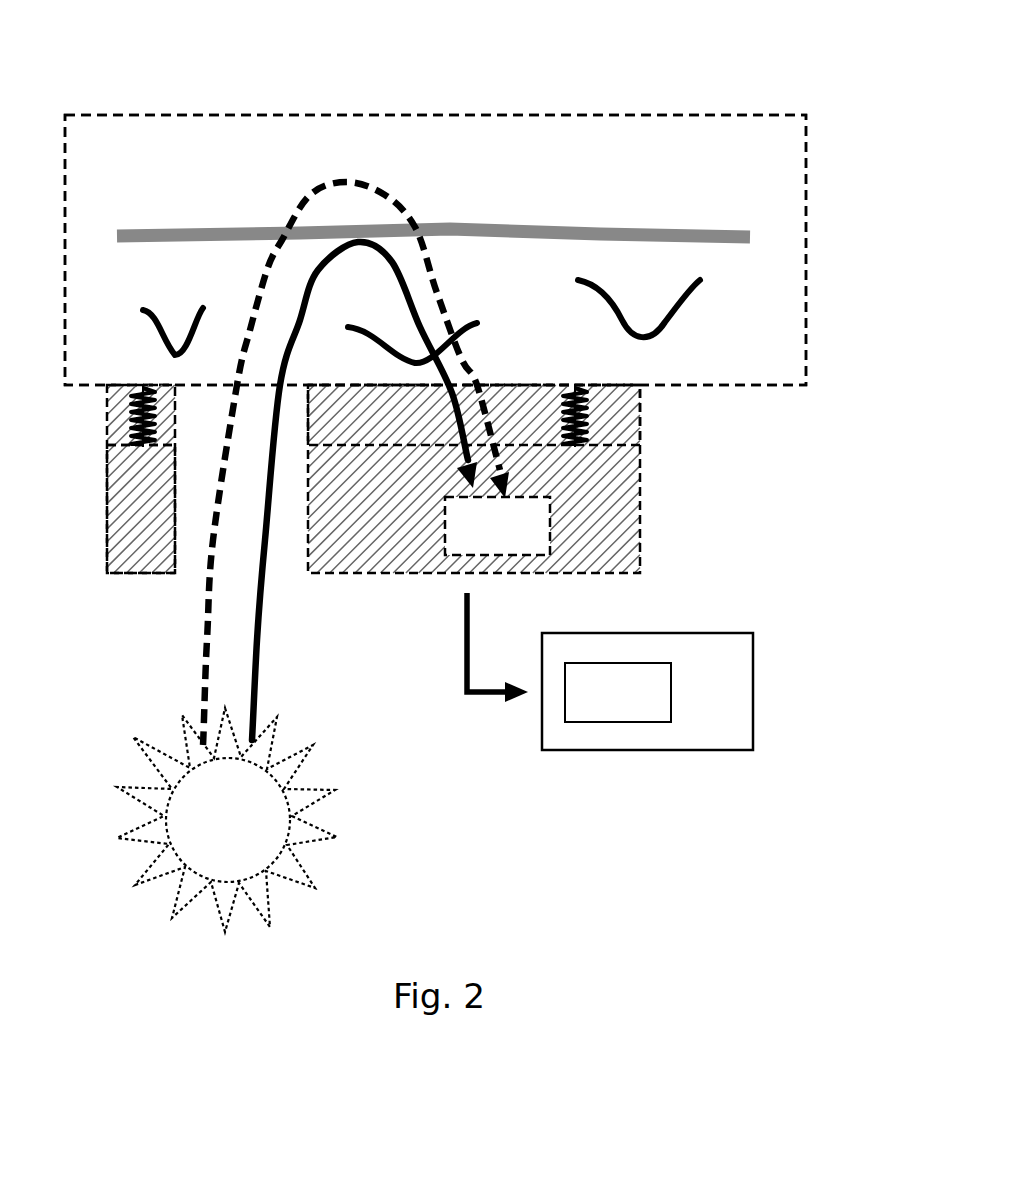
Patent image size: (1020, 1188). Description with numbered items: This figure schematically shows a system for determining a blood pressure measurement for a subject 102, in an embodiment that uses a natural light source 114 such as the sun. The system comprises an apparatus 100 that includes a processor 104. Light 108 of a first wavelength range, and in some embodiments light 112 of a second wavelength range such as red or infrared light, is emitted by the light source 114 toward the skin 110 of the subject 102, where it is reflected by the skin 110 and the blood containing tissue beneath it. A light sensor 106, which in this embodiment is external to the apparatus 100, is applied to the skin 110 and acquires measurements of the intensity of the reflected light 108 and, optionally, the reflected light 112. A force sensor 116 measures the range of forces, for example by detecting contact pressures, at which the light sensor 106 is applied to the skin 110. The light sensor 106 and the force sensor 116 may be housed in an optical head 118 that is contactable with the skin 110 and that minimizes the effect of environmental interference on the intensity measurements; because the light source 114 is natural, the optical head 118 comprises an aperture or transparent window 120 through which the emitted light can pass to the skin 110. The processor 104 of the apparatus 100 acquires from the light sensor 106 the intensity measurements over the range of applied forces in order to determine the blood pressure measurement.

The apparatus 100 is at (745, 677).
The subject 102 is at (806, 172).
The processor 104 is at (677, 275).
The light sensor 106 is at (497, 526).
The light of the first wavelength range 108 is at (474, 479).
The skin 110 is at (119, 159).
The light of the second wavelength range 112 is at (474, 415).
The light source 114 is at (313, 557).
The force sensor 116 is at (595, 415).
The optical head 118 is at (107, 487).
The aperture or transparent window 120 is at (190, 558).